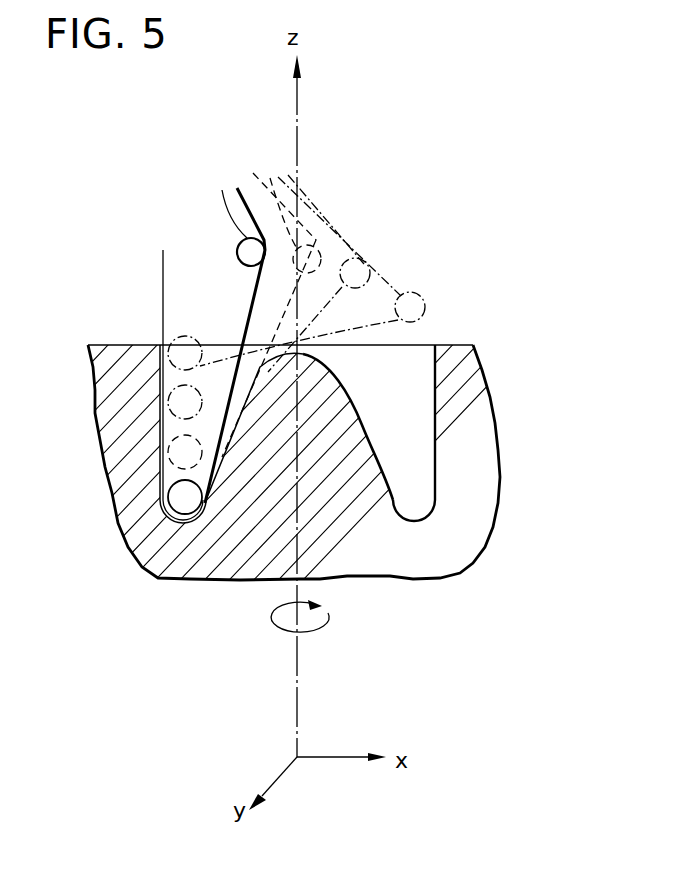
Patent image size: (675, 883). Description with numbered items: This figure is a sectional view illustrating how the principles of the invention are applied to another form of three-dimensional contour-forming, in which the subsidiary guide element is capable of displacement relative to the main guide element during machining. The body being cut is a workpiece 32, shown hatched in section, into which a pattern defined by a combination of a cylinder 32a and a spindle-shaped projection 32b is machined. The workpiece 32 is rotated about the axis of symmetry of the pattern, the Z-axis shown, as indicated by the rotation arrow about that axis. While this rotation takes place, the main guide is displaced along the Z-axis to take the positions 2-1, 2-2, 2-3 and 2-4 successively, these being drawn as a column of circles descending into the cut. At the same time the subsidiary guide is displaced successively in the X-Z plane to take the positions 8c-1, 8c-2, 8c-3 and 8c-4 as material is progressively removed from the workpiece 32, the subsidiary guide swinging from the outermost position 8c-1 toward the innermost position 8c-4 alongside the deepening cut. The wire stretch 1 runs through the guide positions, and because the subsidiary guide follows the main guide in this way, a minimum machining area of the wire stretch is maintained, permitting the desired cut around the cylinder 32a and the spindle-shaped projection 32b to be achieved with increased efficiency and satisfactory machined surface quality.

The liner sheet 1 is at (163, 256).
The first position of main guide 2-1 is at (170, 344).
The second position of main guide 2-2 is at (168, 403).
The third position of main guide 2-3 is at (168, 452).
The fourth position of main guide 2-4 is at (160, 505).
The first position of subsidiary guide 8c-1 is at (418, 300).
The second position of subsidiary guide 8c-2 is at (378, 255).
The third position of subsidiary guide 8c-3 is at (333, 212).
The fourth position of subsidiary guide 8c-4 is at (236, 188).
The workpiece 32 is at (228, 568).
The cylinder 32a is at (437, 408).
The spindle-shaped projection 32b is at (382, 477).